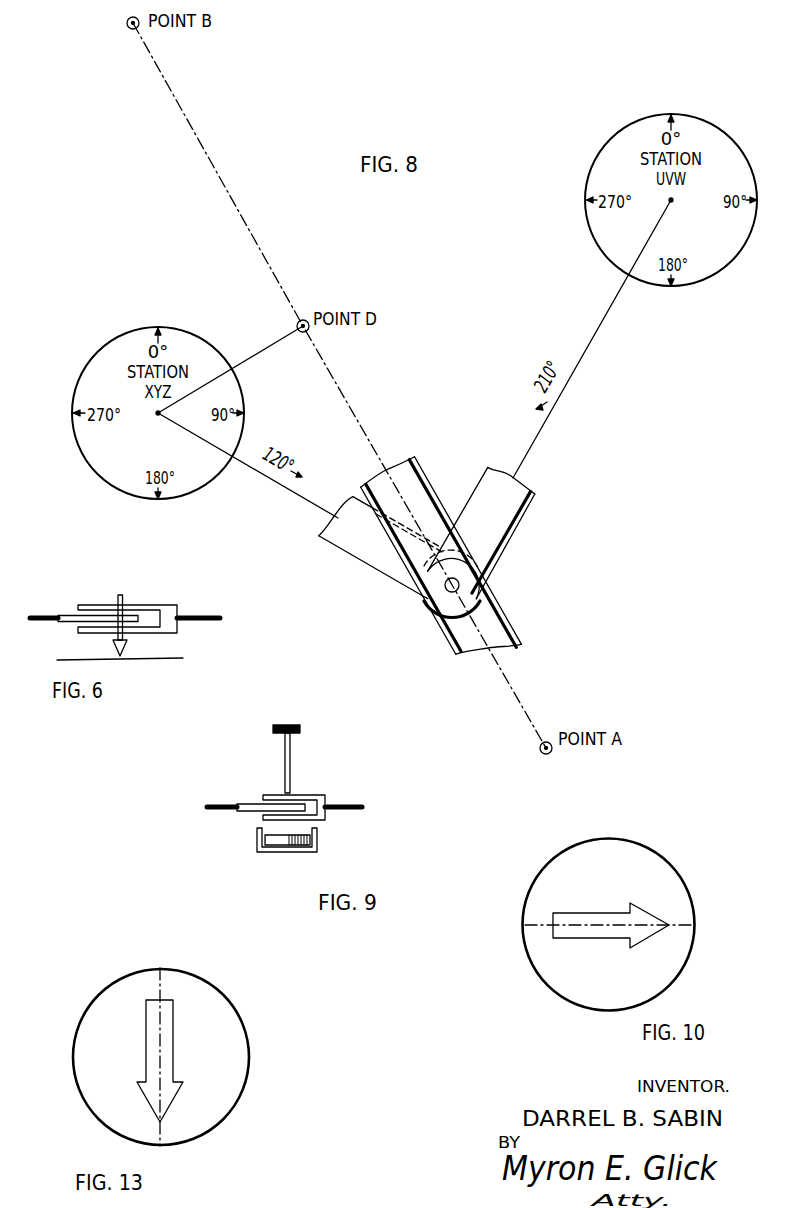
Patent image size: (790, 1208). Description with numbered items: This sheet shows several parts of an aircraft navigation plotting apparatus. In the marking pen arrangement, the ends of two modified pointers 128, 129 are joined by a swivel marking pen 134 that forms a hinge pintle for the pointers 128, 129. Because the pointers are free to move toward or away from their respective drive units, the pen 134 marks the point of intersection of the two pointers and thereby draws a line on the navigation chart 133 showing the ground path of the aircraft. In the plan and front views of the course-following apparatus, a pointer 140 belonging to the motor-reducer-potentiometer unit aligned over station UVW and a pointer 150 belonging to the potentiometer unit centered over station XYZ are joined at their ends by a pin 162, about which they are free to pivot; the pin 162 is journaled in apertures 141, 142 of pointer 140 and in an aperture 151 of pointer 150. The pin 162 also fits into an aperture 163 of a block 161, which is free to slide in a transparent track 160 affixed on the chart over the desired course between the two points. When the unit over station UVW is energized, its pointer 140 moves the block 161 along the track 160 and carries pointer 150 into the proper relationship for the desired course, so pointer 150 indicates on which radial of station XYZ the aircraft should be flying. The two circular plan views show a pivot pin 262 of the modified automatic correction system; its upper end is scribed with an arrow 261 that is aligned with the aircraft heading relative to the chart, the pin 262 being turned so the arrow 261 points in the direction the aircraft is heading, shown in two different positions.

In FIG. 6, the modified pointer 128 is at (165, 605).
In FIG. 6, the modified pointer 129 is at (62, 612).
In FIG. 6, the navigation chart 133 is at (153, 659).
In FIG. 6, the swivel marking pen 134 is at (121, 595).
In FIG. 8, the pointer 140 is at (505, 548).
In FIG. 9, the pointer 140 is at (323, 797).
In FIG. 9, the aperture 141 is at (302, 785).
In FIG. 9, the aperture 142 is at (290, 817).
In FIG. 8, the pointer 150 is at (343, 554).
In FIG. 9, the pointer 150 is at (242, 806).
In FIG. 9, the aperture 151 is at (280, 808).
In FIG. 8, the transparent track 160 is at (500, 591).
In FIG. 9, the transparent track 160 is at (258, 845).
In FIG. 8, the block 161 is at (455, 619).
In FIG. 9, the block 161 is at (310, 840).
In FIG. 9, the pin 162 is at (291, 749).
In FIG. 9, the aperture 163 is at (290, 847).
In FIG. 10, the arrow 261 is at (612, 940).
In FIG. 13, the arrow 261 is at (175, 1067).
In FIG. 10, the pivot pin 262 is at (665, 853).
In FIG. 13, the pivot pin 262 is at (228, 1114).